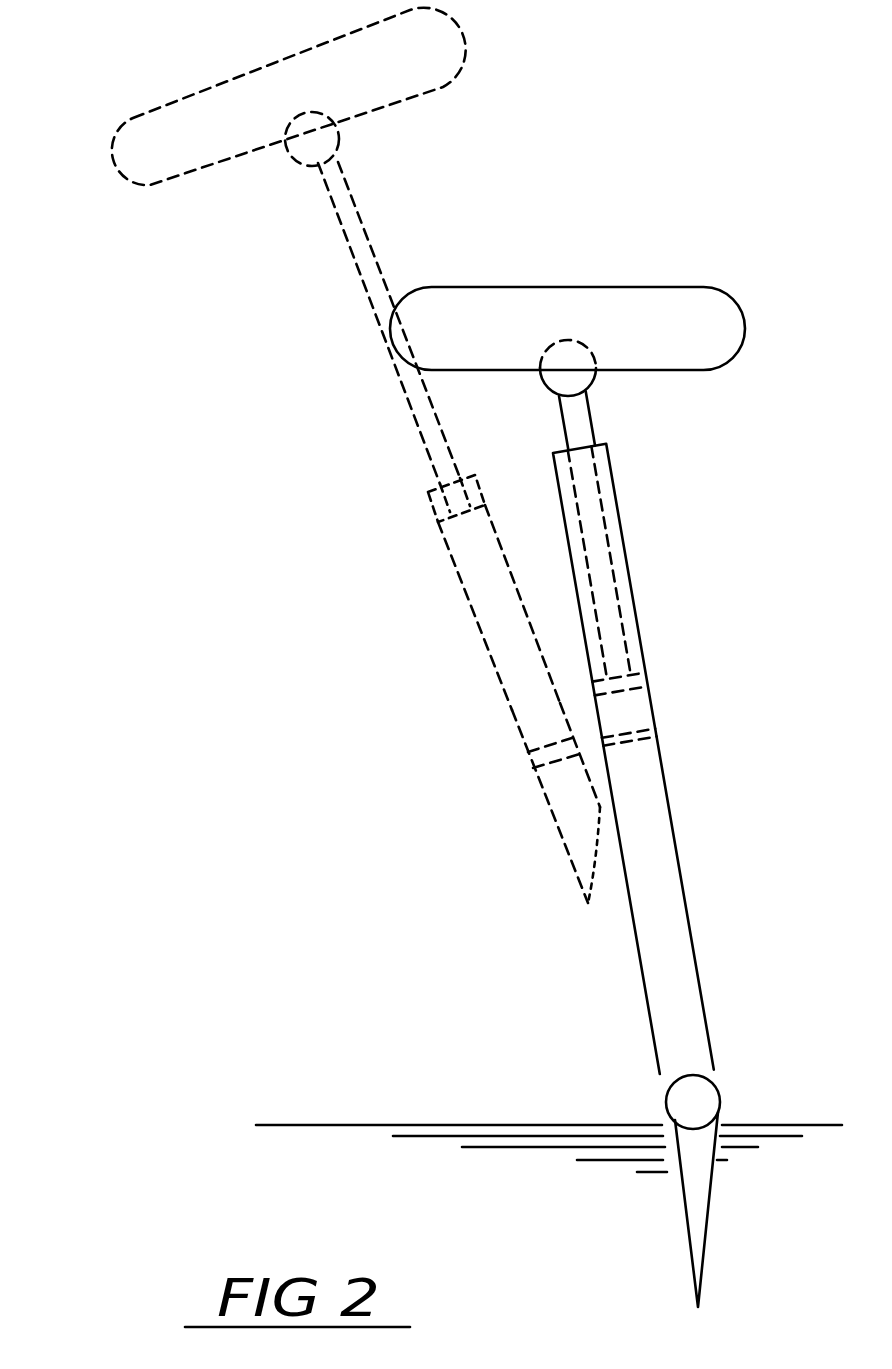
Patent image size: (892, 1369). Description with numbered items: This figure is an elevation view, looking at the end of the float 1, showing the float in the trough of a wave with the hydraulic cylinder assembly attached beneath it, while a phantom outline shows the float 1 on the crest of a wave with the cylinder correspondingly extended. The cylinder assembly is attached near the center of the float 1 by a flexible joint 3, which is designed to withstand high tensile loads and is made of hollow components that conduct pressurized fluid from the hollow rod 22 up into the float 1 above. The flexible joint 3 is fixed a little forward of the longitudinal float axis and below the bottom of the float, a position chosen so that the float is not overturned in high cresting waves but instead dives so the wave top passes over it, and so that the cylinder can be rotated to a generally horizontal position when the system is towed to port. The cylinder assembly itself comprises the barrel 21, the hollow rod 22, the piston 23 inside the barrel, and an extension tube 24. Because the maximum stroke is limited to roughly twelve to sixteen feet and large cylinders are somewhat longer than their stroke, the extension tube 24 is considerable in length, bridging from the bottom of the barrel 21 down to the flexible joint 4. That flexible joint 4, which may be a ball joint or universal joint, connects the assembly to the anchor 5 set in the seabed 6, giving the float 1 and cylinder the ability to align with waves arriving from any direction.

The float 1 is at (133, 127).
The flexible joint 3 is at (333, 153).
The hollow rod 22 is at (338, 210).
The barrel 21 is at (492, 622).
The piston 23 is at (430, 512).
The extension tube 24 is at (565, 800).
The flexible joint 4 is at (700, 1098).
The anchor 5 is at (693, 1197).
The seabed 6 is at (570, 1128).